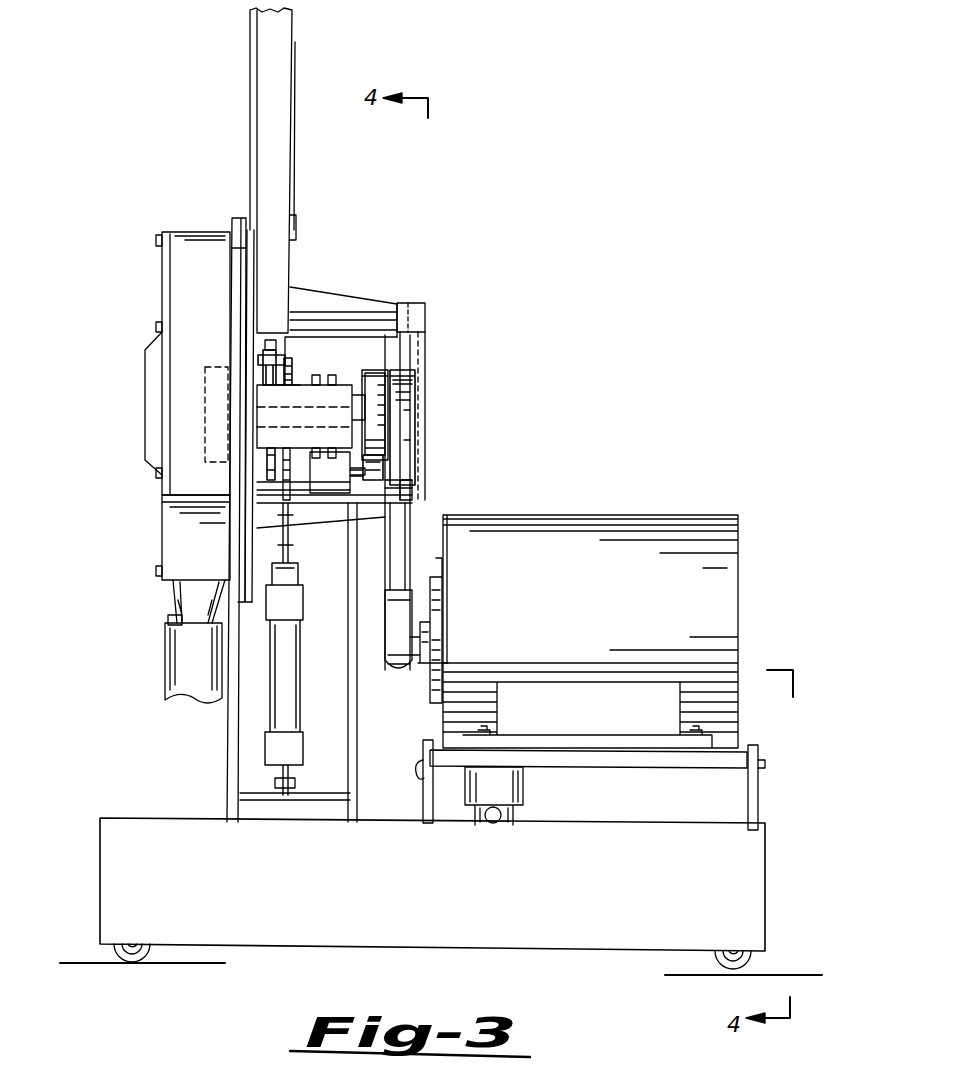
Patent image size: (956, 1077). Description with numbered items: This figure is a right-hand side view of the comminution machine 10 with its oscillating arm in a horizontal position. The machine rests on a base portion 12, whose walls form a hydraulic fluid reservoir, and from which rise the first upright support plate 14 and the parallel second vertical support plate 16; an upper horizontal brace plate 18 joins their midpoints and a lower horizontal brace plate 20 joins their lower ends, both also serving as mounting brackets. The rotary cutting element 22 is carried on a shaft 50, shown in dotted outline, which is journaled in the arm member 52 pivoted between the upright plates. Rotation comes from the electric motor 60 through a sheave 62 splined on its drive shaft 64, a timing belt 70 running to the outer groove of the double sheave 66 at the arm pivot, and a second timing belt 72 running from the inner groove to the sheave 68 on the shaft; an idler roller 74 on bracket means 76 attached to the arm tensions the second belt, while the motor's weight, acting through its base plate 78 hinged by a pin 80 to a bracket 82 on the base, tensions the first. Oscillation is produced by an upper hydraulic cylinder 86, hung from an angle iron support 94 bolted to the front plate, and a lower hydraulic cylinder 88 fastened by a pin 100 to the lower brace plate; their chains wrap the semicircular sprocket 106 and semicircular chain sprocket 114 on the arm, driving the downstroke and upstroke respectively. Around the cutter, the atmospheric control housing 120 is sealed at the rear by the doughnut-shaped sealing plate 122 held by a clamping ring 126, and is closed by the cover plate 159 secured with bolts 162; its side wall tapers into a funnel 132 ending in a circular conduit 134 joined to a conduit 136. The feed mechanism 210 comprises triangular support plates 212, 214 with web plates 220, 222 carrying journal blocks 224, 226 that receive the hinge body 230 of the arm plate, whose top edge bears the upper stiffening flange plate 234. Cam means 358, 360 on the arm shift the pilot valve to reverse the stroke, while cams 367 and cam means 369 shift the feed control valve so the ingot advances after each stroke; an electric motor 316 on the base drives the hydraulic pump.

The comminution machine 10 is at (166, 208).
The base portion 12 is at (105, 880).
The first upright support plate 14 is at (232, 748).
The second vertical support plate 16 is at (348, 682).
The upper horizontal brace plate 18 is at (322, 503).
The lower horizontal brace plate 20 is at (330, 798).
The rotary cutting element 22 is at (214, 368).
The shaft 50 is at (290, 414).
The arm member 52 is at (285, 445).
The electric motor 60 is at (541, 524).
The sheave 62 is at (386, 625).
The drive shaft 64 is at (428, 634).
The double sheave 66 is at (416, 386).
The sheave 68 is at (362, 372).
The timing belt 70 is at (388, 553).
The second timing belt 72 is at (390, 372).
The idler roller 74 is at (384, 478).
The bracket means 76 is at (346, 475).
The base plate 78 is at (584, 768).
The pin 80 is at (426, 776).
The bracket 82 is at (428, 812).
The upper hydraulic cylinder 86 is at (294, 154).
The lower hydraulic cylinder 88 is at (276, 677).
The angle iron support 94 is at (262, 114).
The pin 100 is at (278, 784).
The semicircular sprocket 106 is at (268, 386).
The semicircular chain sprocket 114 is at (300, 386).
The atmospheric control housing 120 is at (163, 416).
The doughnut-shaped sealing plate 122 is at (248, 585).
The clamping ring 126 is at (255, 548).
The funnel 132 is at (170, 583).
The circular conduit 134 is at (168, 619).
The conduit 136 is at (182, 655).
The cover plate 159 is at (165, 283).
The bolts 162 is at (156, 241).
The feed mechanism 210 is at (388, 302).
The right-triangularly shaped support plate 212 is at (390, 490).
The right-triangularly shaped support plate 214 is at (305, 297).
The web plate 220 is at (312, 524).
The web plate 222 is at (330, 314).
The journal block 224 is at (412, 492).
The journal block 226 is at (416, 318).
The hinge body 230 is at (426, 356).
The upper stiffening flange plate 234 is at (318, 322).
The electric motor 316 is at (516, 794).
The cam means 358 is at (330, 450).
The cam means 360 is at (342, 378).
The cams 367 is at (307, 378).
The cam means 369 is at (313, 460).